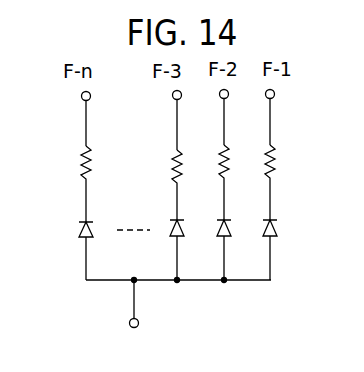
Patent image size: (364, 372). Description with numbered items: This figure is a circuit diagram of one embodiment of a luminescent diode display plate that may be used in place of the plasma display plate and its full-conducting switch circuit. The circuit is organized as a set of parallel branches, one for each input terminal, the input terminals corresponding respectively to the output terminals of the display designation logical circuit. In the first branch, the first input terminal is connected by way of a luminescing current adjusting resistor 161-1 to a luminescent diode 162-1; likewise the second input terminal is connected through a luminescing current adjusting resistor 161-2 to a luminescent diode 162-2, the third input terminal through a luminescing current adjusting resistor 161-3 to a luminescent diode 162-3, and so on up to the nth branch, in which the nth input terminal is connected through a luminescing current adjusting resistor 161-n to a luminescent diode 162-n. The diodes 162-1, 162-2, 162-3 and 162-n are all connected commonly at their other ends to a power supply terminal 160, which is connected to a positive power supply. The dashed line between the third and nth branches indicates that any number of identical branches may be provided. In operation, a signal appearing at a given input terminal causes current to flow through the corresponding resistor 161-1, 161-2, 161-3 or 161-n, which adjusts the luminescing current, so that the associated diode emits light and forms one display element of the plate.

The luminescing current adjusting resistor 161-n is at (82, 163).
The luminescing current adjusting resistor 161-3 is at (173, 162).
The luminescing current adjusting resistor 161-2 is at (229, 158).
The luminescing current adjusting resistor 161-1 is at (277, 160).
The luminescent diode 162-n is at (79, 226).
The luminescent diode 162-3 is at (171, 228).
The luminescent diode 162-2 is at (240, 225).
The luminescent diode 162-1 is at (277, 230).
The power supply terminal 160 is at (140, 320).